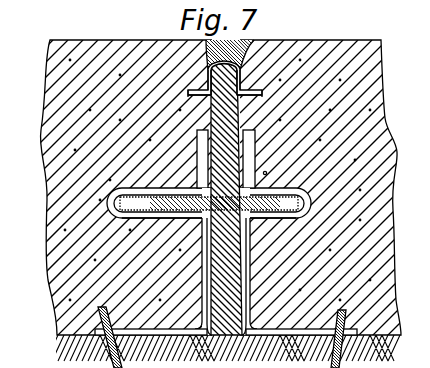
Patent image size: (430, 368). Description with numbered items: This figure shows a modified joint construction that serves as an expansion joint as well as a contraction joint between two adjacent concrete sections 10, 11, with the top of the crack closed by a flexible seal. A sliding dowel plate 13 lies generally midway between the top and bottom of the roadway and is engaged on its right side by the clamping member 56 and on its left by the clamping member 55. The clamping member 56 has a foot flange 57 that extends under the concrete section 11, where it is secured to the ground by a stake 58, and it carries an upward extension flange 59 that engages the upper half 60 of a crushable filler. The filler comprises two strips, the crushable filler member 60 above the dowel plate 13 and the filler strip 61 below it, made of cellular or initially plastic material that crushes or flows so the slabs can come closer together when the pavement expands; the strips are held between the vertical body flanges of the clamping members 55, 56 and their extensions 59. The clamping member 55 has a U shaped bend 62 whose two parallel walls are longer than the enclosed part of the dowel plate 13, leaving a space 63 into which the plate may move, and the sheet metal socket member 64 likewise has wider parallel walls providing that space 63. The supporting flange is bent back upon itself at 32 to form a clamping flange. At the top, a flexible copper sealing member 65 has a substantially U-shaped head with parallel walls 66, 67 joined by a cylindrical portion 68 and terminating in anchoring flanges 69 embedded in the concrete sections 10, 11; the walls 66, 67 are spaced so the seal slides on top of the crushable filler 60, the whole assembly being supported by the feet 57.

The concrete section 10 is at (92, 40).
The concrete section 11 is at (366, 40).
The sliding dowel plate 13 is at (263, 170).
The bent-back portion of supporting flange 32 is at (311, 198).
The clamping member 55 is at (200, 271).
The clamping member 56 is at (248, 264).
The foot flange 57 is at (97, 335).
The stake 58 is at (110, 318).
The upward extension flange 59 is at (202, 147).
The crushable filler member 60 is at (232, 120).
The filler strip 61 is at (228, 248).
The U shaped bend 62 is at (112, 192).
The space 63 is at (150, 196).
The sheet metal socket member 64 is at (143, 214).
The flexible copper sealing member 65 is at (206, 58).
The parallel wall 66 is at (208, 75).
The parallel wall 67 is at (240, 65).
The cylindrical portion 68 is at (247, 50).
The anchoring flange 69 is at (198, 92).